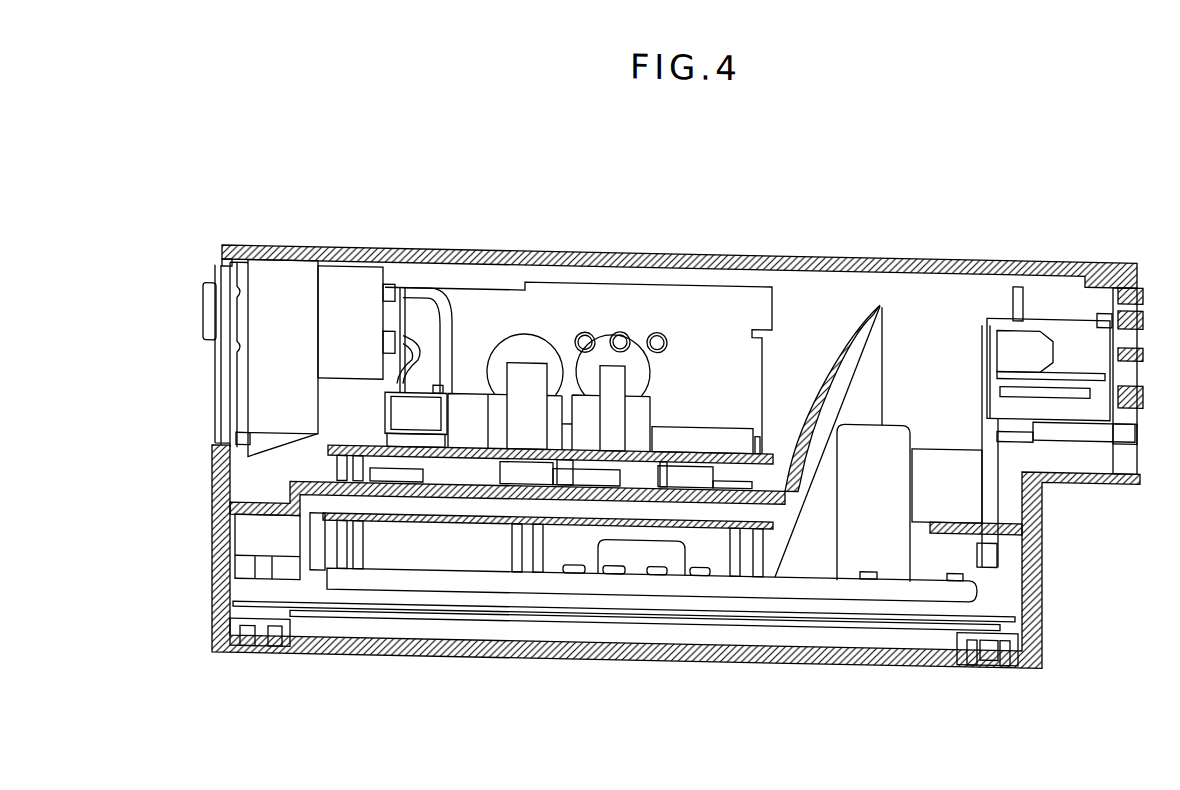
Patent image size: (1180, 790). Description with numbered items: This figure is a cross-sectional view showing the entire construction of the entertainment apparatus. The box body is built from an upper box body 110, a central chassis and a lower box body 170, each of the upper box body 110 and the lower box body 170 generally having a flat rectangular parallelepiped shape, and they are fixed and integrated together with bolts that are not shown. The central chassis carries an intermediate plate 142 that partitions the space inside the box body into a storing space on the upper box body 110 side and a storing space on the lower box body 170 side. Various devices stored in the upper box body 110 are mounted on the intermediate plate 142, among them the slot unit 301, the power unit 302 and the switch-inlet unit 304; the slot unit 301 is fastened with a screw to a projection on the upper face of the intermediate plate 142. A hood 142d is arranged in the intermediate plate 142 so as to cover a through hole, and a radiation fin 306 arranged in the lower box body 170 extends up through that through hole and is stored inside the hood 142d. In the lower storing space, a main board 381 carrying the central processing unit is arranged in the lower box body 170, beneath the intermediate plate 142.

The upper box body 110 is at (937, 246).
The intermediate plate 142 is at (292, 495).
The hood 142d is at (847, 313).
The lower box body 170 is at (1038, 641).
The slot unit 301 is at (1063, 312).
The power unit 302 is at (773, 227).
The switch-inlet unit 304 is at (278, 269).
The radiation fin 306 is at (851, 414).
The main board 381 is at (322, 572).